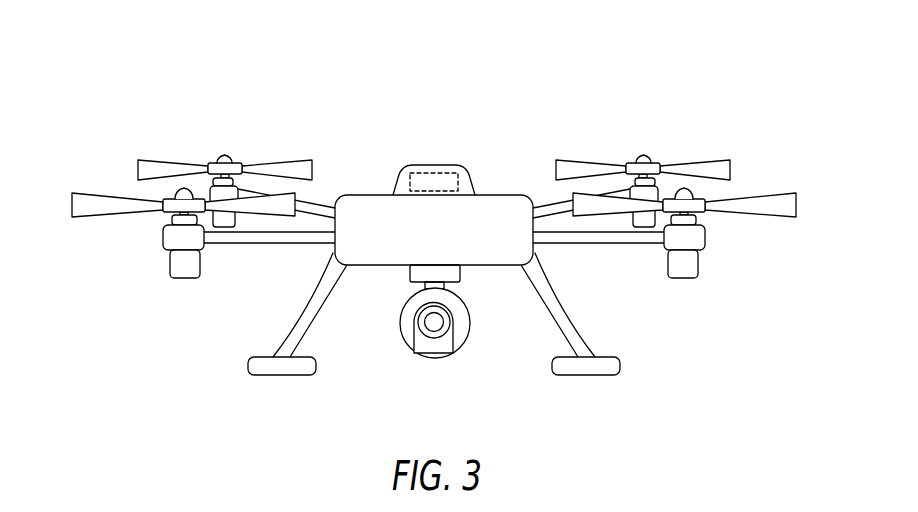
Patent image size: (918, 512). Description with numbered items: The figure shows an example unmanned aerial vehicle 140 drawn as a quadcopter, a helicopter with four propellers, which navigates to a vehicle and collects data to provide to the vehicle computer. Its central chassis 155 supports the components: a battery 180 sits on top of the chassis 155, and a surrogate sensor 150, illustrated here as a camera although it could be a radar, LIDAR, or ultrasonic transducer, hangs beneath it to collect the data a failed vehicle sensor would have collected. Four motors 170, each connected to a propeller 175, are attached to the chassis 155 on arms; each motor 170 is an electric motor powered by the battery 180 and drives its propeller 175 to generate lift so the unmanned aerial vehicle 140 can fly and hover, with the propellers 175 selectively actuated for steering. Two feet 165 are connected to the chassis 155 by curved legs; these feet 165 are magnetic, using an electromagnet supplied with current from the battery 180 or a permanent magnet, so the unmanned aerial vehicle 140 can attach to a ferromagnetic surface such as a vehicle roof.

The unmanned aerial vehicle 140 is at (598, 75).
The surrogate sensor 150 is at (428, 362).
The chassis 155 is at (378, 195).
The foot 165 is at (222, 318).
The motor 170 is at (188, 132).
The propeller 175 is at (130, 117).
The battery 180 is at (447, 166).